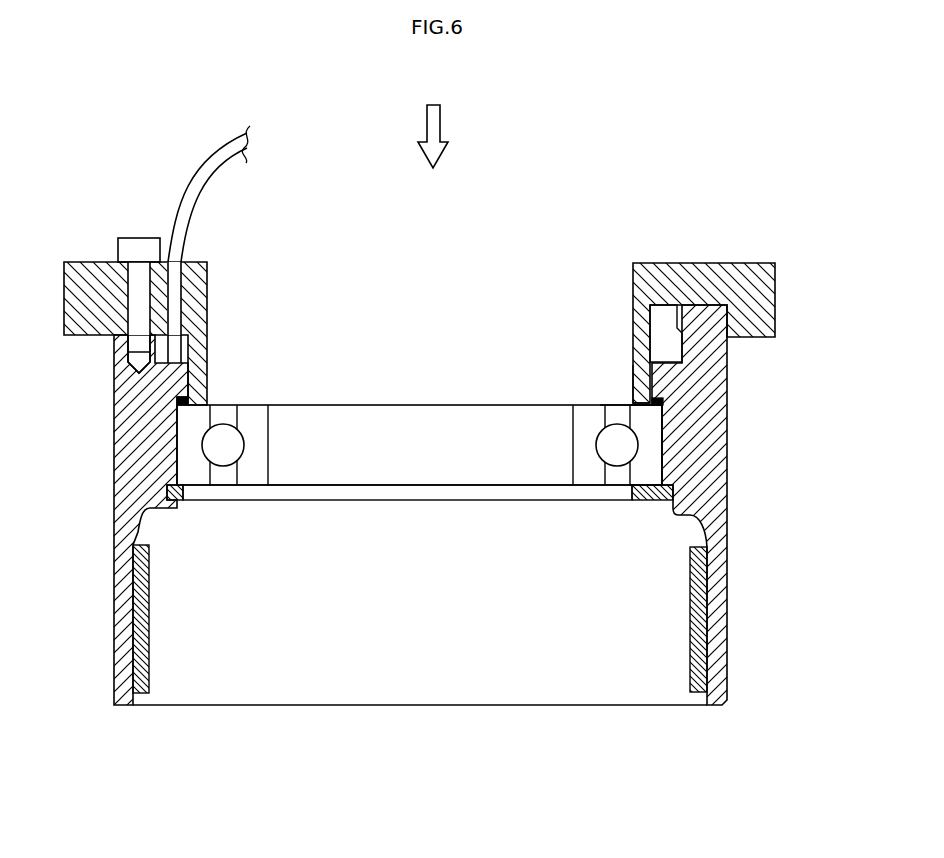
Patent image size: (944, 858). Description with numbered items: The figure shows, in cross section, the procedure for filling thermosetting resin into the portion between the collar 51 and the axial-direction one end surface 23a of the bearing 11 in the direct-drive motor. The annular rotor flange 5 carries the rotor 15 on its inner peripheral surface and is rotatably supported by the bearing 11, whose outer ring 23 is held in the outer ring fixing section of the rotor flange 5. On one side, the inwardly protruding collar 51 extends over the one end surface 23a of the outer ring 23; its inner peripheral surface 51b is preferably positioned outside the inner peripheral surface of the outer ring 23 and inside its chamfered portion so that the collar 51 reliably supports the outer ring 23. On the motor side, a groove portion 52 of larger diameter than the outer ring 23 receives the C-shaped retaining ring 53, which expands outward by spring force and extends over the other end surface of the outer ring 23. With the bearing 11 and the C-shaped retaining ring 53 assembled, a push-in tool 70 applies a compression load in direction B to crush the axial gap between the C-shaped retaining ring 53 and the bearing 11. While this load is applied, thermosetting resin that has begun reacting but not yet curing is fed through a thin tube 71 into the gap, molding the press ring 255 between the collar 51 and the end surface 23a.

The rotor flange 5 is at (713, 468).
The bearing 11 is at (650, 423).
The rotor 15 is at (703, 638).
The outer ring 23 is at (187, 458).
The axial-direction one end surface 23a is at (632, 392).
The collar 51 is at (658, 373).
The inner peripheral surface 51b is at (633, 365).
The groove portion 52 is at (608, 493).
The C-shaped retaining ring 53 is at (677, 495).
The push-in tool 70 is at (708, 272).
The thin tube 71 is at (203, 143).
The press ring 255 is at (662, 402).
The direction B is at (435, 122).